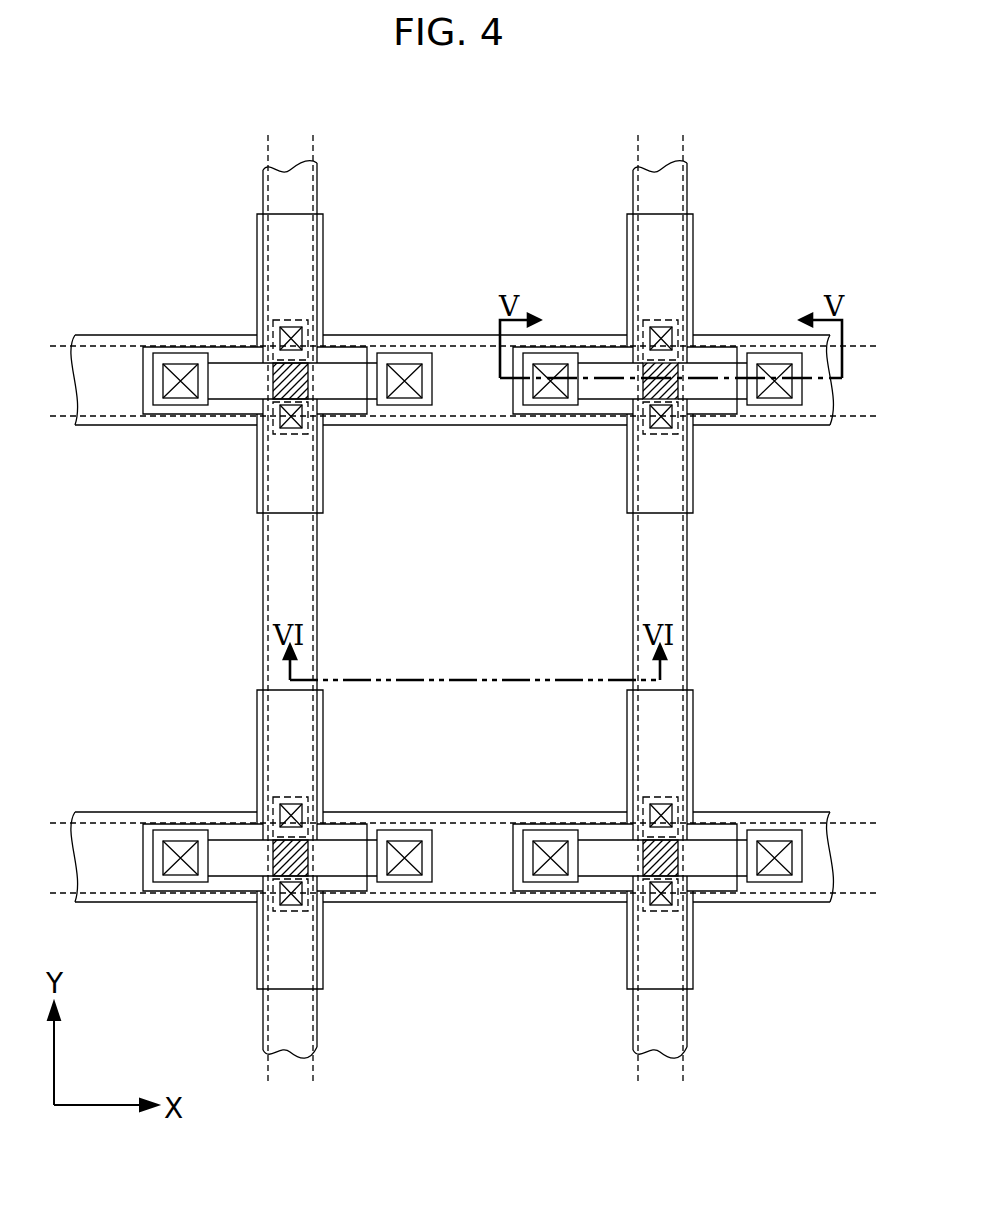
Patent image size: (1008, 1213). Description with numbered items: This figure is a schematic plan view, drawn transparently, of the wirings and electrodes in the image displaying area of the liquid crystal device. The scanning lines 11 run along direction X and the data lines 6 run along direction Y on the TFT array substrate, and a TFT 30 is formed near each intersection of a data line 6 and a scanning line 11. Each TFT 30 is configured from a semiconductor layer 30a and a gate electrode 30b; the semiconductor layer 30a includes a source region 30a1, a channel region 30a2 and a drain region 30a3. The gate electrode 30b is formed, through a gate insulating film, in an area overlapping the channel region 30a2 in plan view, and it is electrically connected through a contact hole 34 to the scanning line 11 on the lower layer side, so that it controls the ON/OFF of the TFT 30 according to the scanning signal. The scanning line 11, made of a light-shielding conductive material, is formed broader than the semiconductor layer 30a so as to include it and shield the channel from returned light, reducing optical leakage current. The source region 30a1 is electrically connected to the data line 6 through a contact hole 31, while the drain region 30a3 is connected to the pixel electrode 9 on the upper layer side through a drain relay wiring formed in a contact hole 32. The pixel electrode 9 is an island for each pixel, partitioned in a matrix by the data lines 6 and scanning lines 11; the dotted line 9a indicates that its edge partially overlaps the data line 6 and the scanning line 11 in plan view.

The data line 6 is at (263, 187).
The pixel electrode 9 is at (620, 557).
The dotted line 9a is at (313, 566).
The scanning line 11 is at (548, 335).
The TFT 30 is at (308, 366).
The semiconductor layer 30a is at (330, 362).
The source region 30a1 is at (595, 429).
The channel region 30a2 is at (624, 326).
The drain region 30a3 is at (727, 430).
The gate electrode 30b is at (313, 315).
The contact hole 31 is at (178, 364).
The contact hole 32 is at (410, 406).
The contact hole 34 is at (286, 328).